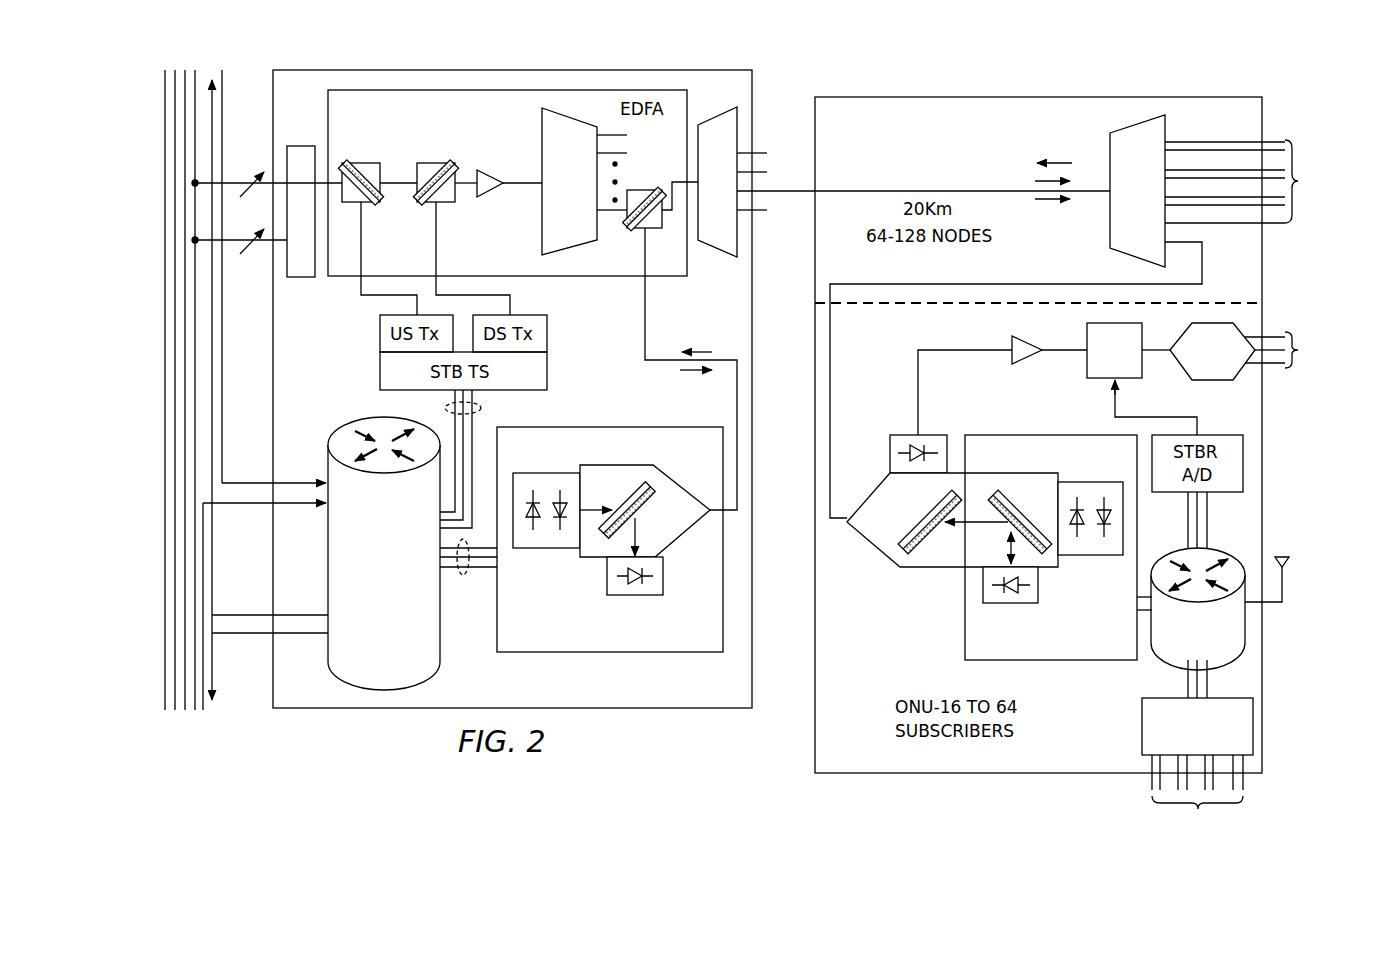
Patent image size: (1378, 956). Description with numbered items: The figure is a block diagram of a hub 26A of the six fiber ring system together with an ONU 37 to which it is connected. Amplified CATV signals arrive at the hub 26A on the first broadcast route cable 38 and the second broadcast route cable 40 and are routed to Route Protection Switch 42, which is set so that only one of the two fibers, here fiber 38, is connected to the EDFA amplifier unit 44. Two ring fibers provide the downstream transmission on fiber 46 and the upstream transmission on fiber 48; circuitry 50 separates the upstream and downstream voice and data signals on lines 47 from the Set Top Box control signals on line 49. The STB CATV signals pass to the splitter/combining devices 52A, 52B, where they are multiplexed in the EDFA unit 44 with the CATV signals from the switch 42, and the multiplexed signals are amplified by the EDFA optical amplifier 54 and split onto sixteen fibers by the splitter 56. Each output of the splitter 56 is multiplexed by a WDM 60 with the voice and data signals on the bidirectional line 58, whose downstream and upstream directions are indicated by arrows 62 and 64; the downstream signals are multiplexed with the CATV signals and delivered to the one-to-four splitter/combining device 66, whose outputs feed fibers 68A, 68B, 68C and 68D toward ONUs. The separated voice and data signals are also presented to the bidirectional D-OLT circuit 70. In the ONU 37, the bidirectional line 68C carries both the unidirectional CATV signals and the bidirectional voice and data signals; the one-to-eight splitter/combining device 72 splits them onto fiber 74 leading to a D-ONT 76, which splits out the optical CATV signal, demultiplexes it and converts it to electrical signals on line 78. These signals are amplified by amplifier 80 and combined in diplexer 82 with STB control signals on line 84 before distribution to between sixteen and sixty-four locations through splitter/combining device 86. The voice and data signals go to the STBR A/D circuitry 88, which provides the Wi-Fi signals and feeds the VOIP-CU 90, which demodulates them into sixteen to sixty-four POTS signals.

The hub 26A is at (347, 710).
The ONU (Optical Network Unit) 37 is at (968, 775).
The Broadcast Route 1 cable 38 is at (248, 182).
The Broadcast Route 2 cable 40 is at (233, 243).
The Route Protection Switch 42 is at (298, 279).
The EDFA amplifier unit 44 is at (580, 279).
The downstream transmission fiber 46 is at (252, 483).
The upstream and downstream signal lines 47 is at (463, 576).
The upstream transmission fiber 48 is at (254, 615).
The STB control signal line 49 is at (483, 408).
The separating circuitry 50 is at (362, 421).
The splitter/combining device 52A is at (352, 163).
The splitter/combining device 52B is at (442, 163).
The EDFA optical amplifier 54 is at (490, 178).
The 1:16 splitter 56 is at (541, 220).
The voice and data line 58 is at (644, 346).
The WDM (wave division multiplexer) 60 is at (648, 190).
The downstream arrow 62 is at (703, 352).
The upstream arrow 64 is at (692, 372).
The 1:4 splitter/combining device 66 is at (720, 251).
The output fiber 68A is at (764, 152).
The output fiber 68B is at (762, 172).
The bidirectional line 68C is at (917, 190).
The output fiber 68D is at (765, 211).
The D-OLT (Digital Optical Line Termination) circuit 70 is at (595, 426).
The 1:8 splitter/combining device 72 is at (1109, 220).
The fiber 74 is at (831, 345).
The D-ONT (Digital Optical Network Termination) 76 is at (1064, 662).
The electrical CATV signal line 78 is at (985, 352).
The amplifier 80 is at (1031, 358).
The diplexer 82 is at (1086, 332).
The STB control signal line 84 is at (1112, 400).
The splitter/combining device 86 is at (1210, 381).
The STBR A/D (Set Top Box Return Analog/Digital) circuitry 88 is at (1224, 549).
The VOIP-CU (Voice Over Internet Protocol Channel Unit) 90 is at (1141, 726).